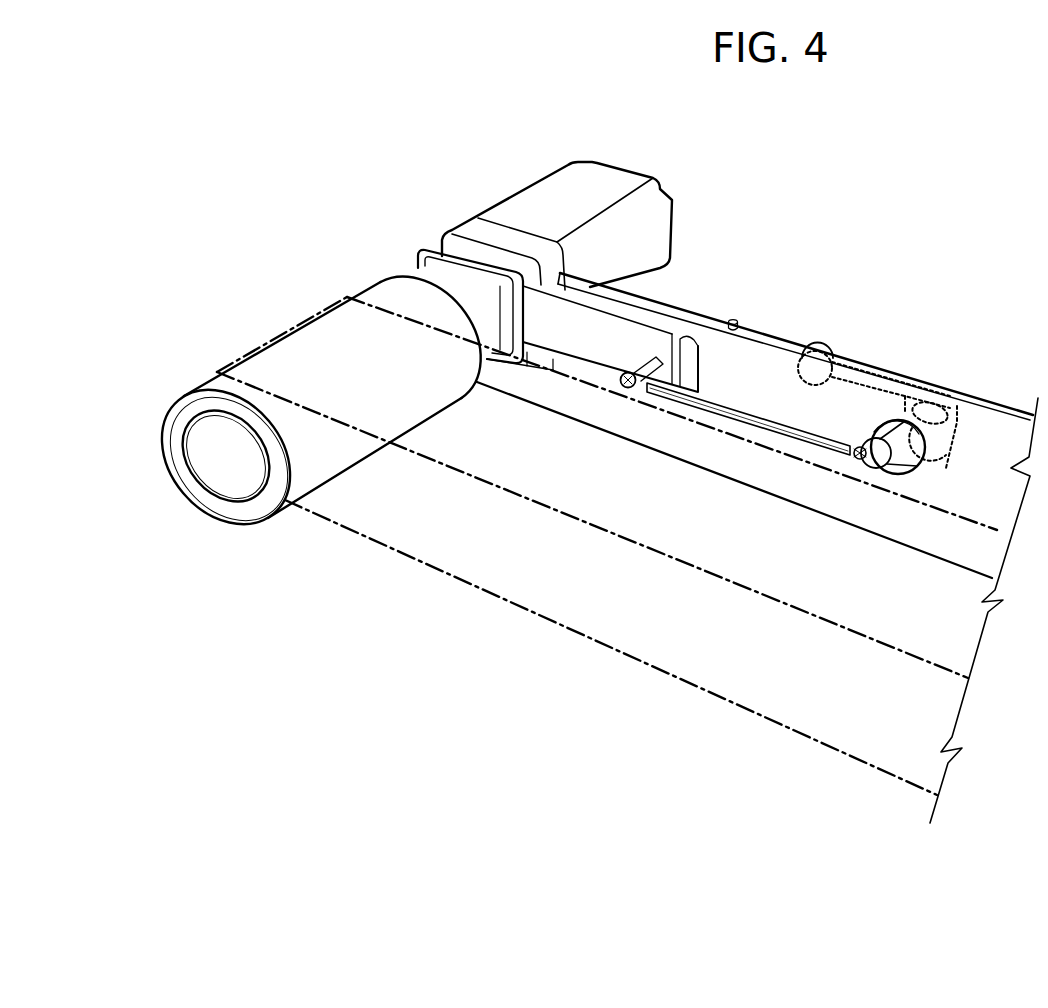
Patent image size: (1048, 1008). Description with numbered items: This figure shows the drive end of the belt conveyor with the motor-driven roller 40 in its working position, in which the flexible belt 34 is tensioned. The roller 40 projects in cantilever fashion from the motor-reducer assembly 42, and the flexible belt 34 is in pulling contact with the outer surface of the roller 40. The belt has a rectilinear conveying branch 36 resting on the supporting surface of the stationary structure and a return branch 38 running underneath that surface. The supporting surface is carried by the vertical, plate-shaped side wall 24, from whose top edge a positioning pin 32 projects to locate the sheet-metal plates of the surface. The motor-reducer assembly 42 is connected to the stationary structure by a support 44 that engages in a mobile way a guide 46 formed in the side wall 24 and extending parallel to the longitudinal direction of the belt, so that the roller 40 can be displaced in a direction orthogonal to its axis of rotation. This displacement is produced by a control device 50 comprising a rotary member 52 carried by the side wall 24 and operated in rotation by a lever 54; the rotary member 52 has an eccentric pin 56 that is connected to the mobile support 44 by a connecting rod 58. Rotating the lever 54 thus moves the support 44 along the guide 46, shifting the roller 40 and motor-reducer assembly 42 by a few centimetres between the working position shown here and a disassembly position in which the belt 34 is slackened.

The side wall 24 is at (815, 345).
The pin 32 is at (740, 318).
The flexible belt 34 is at (488, 486).
The conveying branch 36 is at (718, 557).
The return branch 38 is at (648, 637).
The motor-driven roller 40 is at (385, 282).
The motor-reducer assembly 42 is at (540, 200).
The support 44 is at (630, 340).
The guide 46 is at (690, 345).
The control device 50 is at (938, 372).
The rotary member 52 is at (895, 455).
The lever 54 is at (878, 378).
The eccentric pin 56 is at (858, 458).
The connecting rod 58 is at (745, 416).